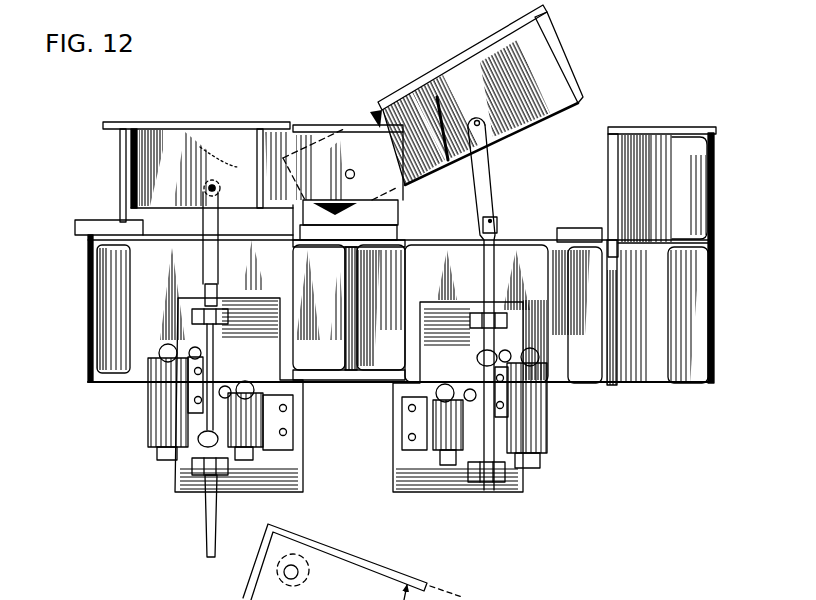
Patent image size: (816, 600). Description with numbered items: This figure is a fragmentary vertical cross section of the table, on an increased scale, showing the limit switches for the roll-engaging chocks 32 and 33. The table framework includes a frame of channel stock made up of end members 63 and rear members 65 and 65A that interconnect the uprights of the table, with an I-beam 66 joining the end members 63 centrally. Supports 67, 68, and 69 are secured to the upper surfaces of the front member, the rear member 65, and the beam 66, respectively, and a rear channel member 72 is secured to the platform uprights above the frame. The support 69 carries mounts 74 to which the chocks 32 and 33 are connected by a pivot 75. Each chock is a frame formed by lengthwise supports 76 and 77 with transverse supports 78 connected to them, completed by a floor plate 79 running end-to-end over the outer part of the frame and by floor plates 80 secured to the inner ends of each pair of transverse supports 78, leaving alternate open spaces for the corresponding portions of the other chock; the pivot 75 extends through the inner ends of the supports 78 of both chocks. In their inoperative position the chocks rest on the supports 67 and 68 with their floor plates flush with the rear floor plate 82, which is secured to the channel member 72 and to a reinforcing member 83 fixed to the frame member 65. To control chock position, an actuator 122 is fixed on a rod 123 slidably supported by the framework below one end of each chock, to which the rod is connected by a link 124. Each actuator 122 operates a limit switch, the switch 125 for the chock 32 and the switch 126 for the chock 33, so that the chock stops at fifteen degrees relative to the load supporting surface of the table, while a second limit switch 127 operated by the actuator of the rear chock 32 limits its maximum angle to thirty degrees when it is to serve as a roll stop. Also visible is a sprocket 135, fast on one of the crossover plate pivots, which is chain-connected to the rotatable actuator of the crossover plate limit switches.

The chock 32 is at (417, 78).
The chock 33 is at (200, 120).
The end member 63 is at (135, 360).
The rear member 65 is at (615, 364).
The rear member 65A is at (712, 352).
The I-beam 66 is at (360, 379).
The support 67 is at (103, 224).
The support 68 is at (586, 228).
The support 69 is at (392, 233).
The rear channel member 72 is at (718, 205).
The mount 74 is at (385, 216).
The pivot 75 is at (350, 125).
The lengthwise support 76 is at (259, 150).
The lengthwise support 77 is at (122, 162).
The transverse support 78 is at (168, 145).
The floor plate 79 is at (494, 43).
The floor plate 80 is at (350, 169).
The rear floor plate 82 is at (700, 119).
The reinforcing member 83 is at (609, 153).
The actuator 122 is at (476, 357).
The rod 123 is at (210, 548).
The link 124 is at (497, 186).
The limit switch 125 is at (450, 455).
The limit switch 126 is at (262, 452).
The second limit switch 127 is at (538, 430).
The sprocket 135 is at (306, 581).